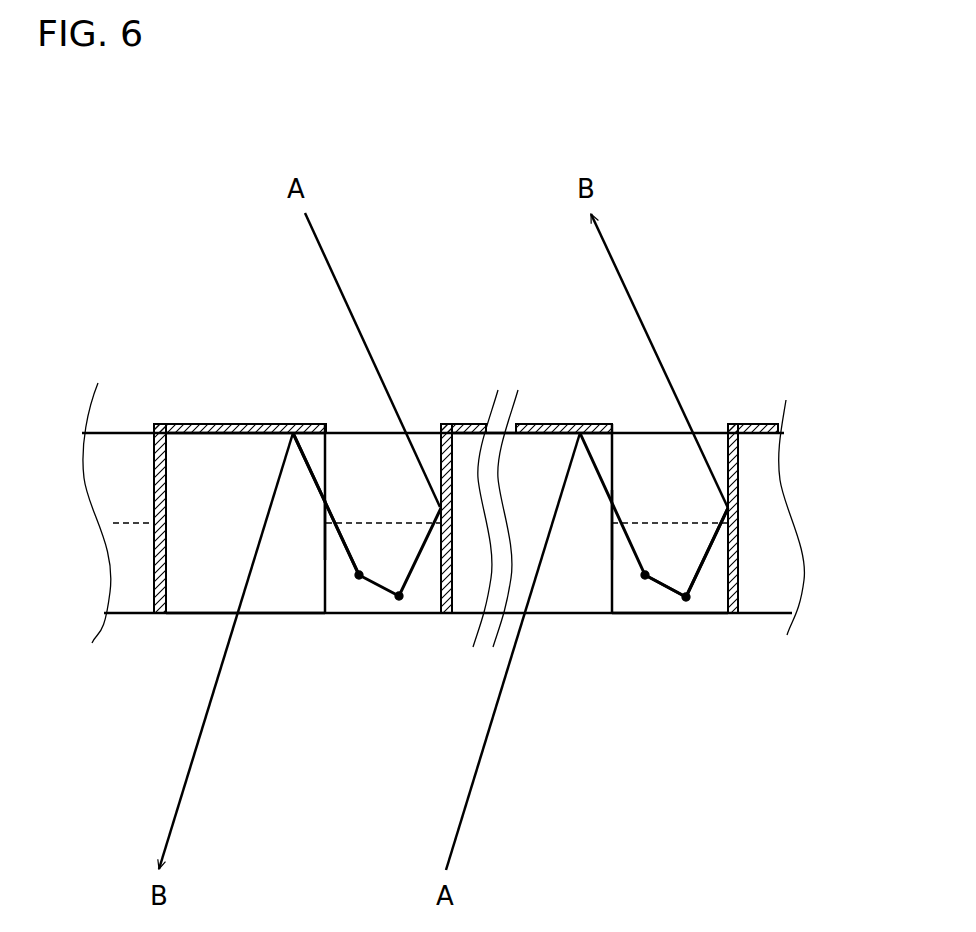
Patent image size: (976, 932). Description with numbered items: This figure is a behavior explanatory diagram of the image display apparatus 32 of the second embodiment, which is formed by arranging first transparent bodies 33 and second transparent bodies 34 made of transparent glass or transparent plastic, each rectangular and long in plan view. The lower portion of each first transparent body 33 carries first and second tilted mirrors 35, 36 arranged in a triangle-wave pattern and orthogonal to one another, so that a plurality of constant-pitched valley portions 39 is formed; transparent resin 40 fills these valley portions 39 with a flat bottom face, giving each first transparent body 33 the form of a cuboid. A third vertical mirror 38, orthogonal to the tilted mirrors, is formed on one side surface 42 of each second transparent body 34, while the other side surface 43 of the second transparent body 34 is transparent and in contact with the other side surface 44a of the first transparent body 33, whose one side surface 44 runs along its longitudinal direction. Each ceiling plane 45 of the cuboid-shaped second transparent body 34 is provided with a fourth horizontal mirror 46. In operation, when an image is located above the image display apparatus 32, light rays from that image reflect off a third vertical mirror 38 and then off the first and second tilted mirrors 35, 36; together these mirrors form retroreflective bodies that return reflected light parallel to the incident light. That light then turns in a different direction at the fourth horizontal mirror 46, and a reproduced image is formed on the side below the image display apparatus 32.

The image display apparatus 32 is at (713, 367).
The first transparent body 33 is at (356, 615).
The second transparent body 34 is at (270, 615).
The first tilted mirror 35 is at (631, 590).
The second tilted mirror 36 is at (660, 595).
The third vertical mirror 38 is at (153, 466).
The valley portion 39 is at (701, 585).
The transparent resin 40 is at (723, 618).
The one side surface of second transparent body 42 is at (159, 570).
The other side surface of second transparent body 43 is at (327, 469).
The one side surface of first transparent body 44 is at (449, 554).
The other side surface of first transparent body 44a is at (321, 538).
The ceiling plane 45 is at (192, 430).
The fourth horizontal mirror 46 is at (213, 436).